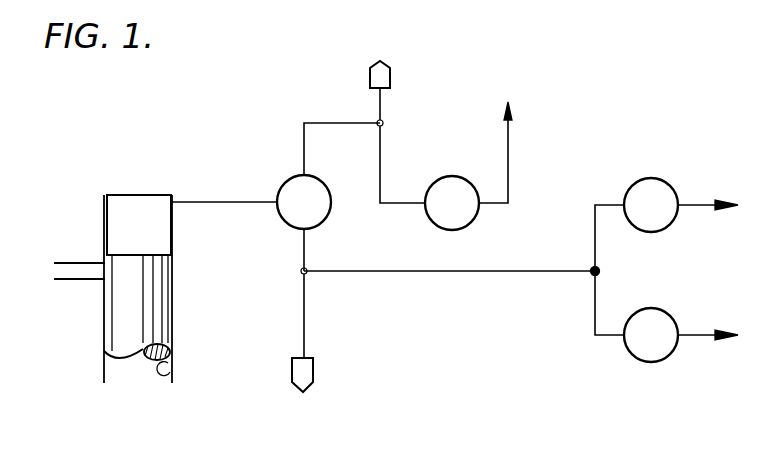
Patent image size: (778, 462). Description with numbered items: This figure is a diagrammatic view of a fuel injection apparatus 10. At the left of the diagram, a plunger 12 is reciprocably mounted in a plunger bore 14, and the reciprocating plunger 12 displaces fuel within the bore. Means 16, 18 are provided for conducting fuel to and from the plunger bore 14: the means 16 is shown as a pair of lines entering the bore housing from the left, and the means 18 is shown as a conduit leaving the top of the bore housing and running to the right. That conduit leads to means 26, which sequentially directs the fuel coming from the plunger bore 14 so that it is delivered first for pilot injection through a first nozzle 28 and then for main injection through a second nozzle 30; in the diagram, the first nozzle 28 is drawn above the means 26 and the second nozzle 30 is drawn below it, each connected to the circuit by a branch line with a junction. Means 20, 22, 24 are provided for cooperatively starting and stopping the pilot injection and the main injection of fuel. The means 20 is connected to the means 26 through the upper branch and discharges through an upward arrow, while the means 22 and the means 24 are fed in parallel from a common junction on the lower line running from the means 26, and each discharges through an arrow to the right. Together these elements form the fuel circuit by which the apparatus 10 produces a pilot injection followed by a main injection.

The fuel injection apparatus 10 is at (247, 148).
The plunger 12 is at (150, 313).
The plunger bore 14 is at (166, 368).
The means for conducting fuel 16 is at (86, 263).
The means for conducting fuel 18 is at (203, 203).
The means for starting and stopping pilot and main injection 20 is at (470, 222).
The means for starting and stopping pilot and main injection 22 is at (670, 226).
The means for starting and stopping pilot and main injection 24 is at (662, 310).
The means for sequentially directing fuel 26 is at (322, 222).
The first nozzle 28 is at (393, 86).
The second nozzle 30 is at (313, 376).